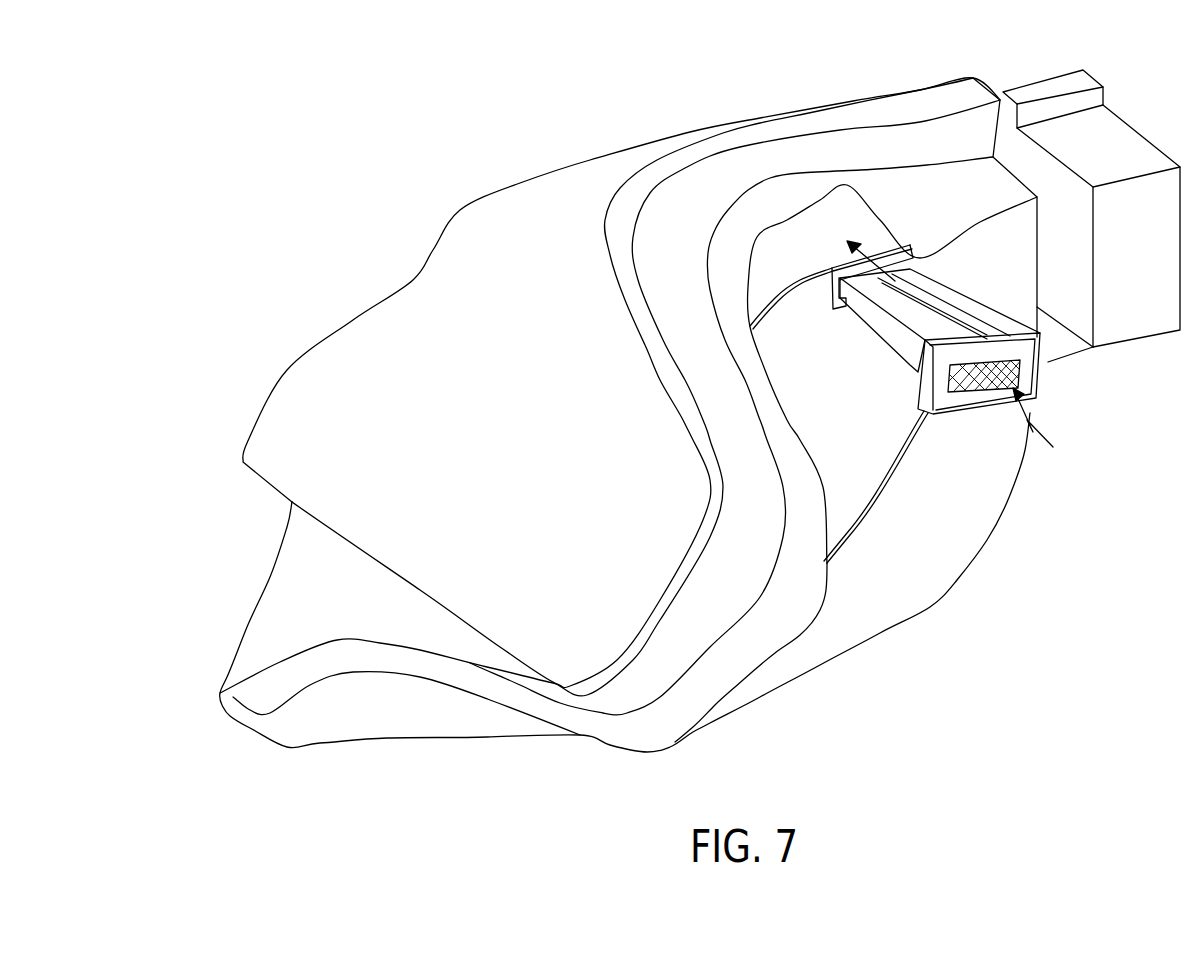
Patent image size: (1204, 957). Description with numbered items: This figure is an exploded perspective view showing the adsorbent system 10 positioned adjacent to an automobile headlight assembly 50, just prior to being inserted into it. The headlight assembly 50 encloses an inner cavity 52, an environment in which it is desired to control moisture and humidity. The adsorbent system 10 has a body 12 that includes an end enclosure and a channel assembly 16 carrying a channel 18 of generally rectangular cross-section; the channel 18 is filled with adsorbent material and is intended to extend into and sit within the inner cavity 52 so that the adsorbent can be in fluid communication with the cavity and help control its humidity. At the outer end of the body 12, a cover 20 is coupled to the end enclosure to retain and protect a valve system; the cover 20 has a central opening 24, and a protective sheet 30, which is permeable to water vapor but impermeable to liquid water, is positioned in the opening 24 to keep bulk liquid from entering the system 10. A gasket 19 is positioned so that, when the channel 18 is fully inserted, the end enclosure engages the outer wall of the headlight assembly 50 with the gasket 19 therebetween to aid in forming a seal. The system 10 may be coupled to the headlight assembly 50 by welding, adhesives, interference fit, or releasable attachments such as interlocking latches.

The headlight assembly 50 is at (470, 152).
The inner cavity 52 is at (825, 222).
The adsorbent system 10 is at (955, 359).
The body 12 is at (950, 313).
The channel assembly 16 is at (887, 310).
The channel 18 is at (923, 293).
The gasket 19 is at (913, 258).
The cover 20 is at (1030, 333).
The protective sheet 30 is at (1020, 367).
The central opening 24 is at (998, 415).